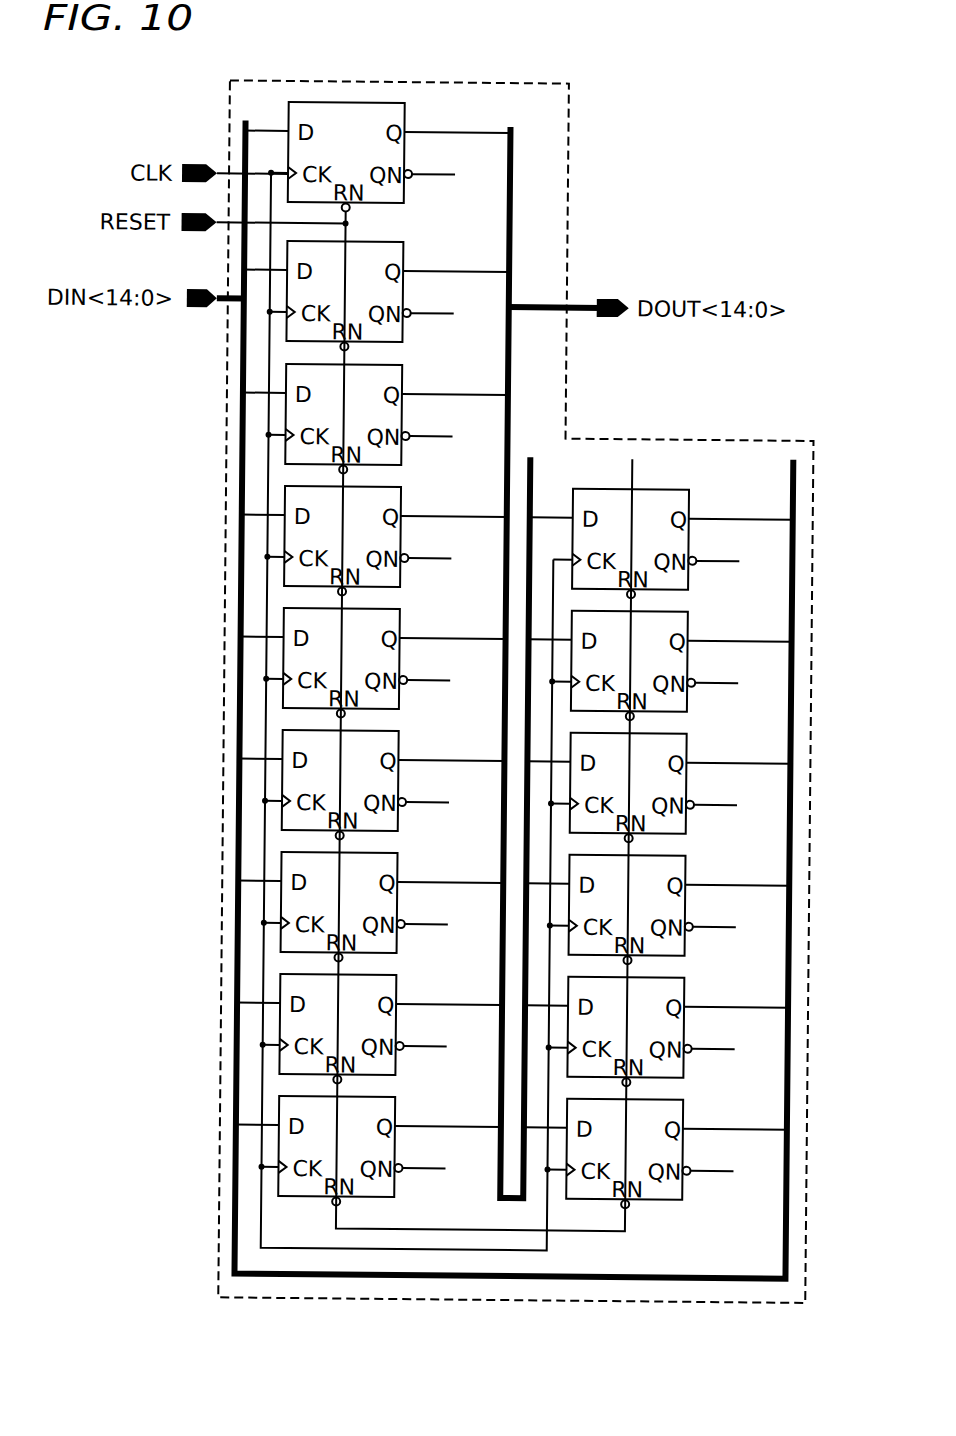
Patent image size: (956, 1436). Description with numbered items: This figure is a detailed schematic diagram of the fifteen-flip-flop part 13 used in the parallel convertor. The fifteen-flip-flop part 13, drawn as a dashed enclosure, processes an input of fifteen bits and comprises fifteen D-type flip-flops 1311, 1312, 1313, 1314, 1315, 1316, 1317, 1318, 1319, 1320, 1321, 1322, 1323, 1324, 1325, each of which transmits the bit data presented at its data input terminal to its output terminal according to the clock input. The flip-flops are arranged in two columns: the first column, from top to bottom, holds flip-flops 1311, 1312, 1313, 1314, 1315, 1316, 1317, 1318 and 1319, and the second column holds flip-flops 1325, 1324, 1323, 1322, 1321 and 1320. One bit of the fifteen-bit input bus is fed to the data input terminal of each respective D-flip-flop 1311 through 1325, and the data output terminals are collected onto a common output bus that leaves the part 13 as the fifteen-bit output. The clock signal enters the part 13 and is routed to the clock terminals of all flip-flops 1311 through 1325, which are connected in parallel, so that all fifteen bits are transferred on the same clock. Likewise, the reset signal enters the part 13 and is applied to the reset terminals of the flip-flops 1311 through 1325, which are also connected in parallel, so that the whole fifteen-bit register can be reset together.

The 15-flip-flop part 13 is at (224, 107).
The D-type flip-flop 1311 is at (399, 108).
The D-type flip-flop 1312 is at (399, 247).
The D-type flip-flop 1313 is at (399, 370).
The D-type flip-flop 1314 is at (399, 492).
The D-type flip-flop 1315 is at (399, 614).
The D-type flip-flop 1316 is at (399, 736).
The D-type flip-flop 1317 is at (399, 858).
The D-type flip-flop 1318 is at (399, 980).
The D-type flip-flop 1319 is at (399, 1102).
The D-type flip-flop 1320 is at (687, 1102).
The D-type flip-flop 1321 is at (687, 980).
The D-type flip-flop 1322 is at (687, 858).
The D-type flip-flop 1323 is at (687, 736).
The D-type flip-flop 1324 is at (687, 614).
The D-type flip-flop 1325 is at (687, 492).